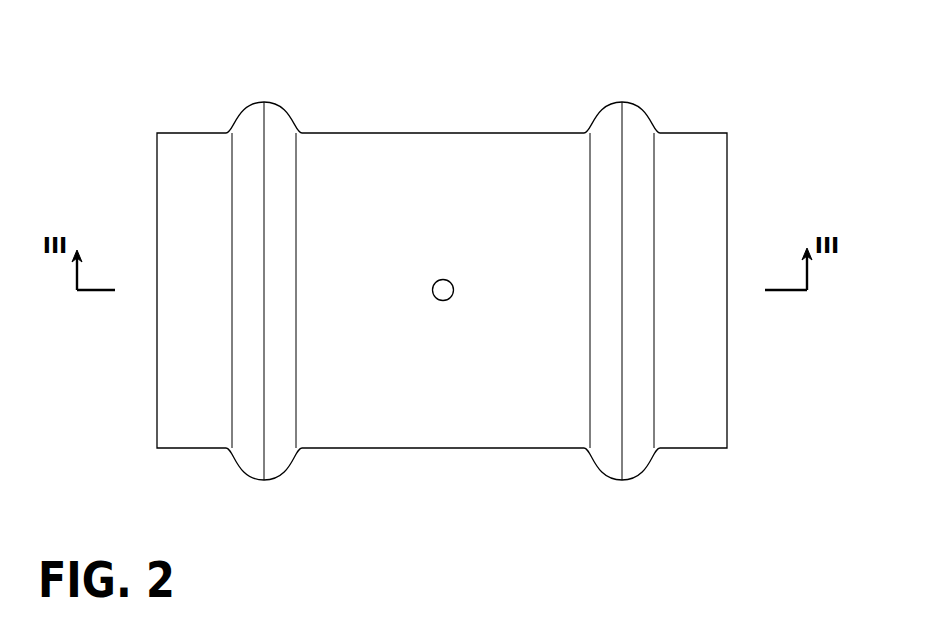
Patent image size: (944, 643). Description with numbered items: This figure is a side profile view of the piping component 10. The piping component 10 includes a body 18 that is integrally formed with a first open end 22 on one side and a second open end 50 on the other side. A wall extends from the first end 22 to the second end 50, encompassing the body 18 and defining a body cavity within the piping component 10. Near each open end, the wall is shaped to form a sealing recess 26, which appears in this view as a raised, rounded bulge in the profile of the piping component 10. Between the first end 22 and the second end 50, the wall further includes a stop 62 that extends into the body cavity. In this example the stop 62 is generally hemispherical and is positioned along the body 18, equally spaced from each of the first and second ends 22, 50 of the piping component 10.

The piping component 10 is at (735, 102).
The body 18 is at (400, 163).
The first open end 22 is at (157, 183).
The sealing recess 26 is at (255, 123).
The second open end 50 is at (727, 198).
The stop 62 is at (435, 298).